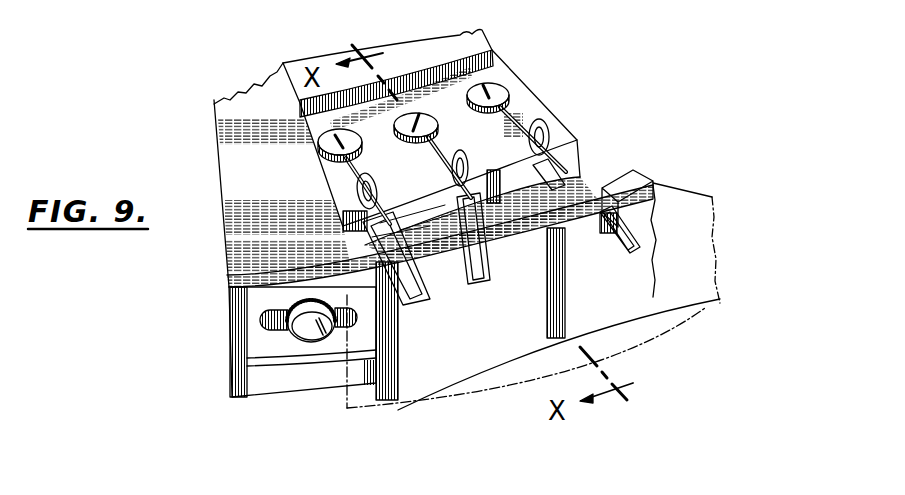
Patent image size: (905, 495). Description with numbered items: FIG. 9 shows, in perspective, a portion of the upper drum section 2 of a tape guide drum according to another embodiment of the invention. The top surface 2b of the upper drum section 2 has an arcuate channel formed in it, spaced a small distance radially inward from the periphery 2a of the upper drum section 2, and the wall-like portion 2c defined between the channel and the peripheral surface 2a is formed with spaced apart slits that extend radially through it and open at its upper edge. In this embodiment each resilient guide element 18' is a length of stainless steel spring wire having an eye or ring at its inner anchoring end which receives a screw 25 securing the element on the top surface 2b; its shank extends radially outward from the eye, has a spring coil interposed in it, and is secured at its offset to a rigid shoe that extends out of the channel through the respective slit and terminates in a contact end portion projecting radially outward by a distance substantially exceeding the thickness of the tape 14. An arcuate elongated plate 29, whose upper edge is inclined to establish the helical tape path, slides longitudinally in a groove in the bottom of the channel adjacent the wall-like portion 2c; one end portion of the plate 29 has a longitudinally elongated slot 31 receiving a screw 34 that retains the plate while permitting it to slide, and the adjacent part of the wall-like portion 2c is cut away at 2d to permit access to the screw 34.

The upper drum section 2 is at (560, 137).
The periphery of upper drum section 2a is at (413, 360).
The top surface of upper drum section 2b is at (480, 75).
The wall-like portion 2c is at (637, 170).
The cut-away part of wall-like portion 2d is at (323, 360).
The tape 14 is at (700, 255).
The resilient guide element 18' is at (407, 165).
The screw 25 is at (500, 92).
The elongated plate 29 is at (247, 343).
The longitudinally elongated slot 31 is at (265, 318).
The screw 34 is at (303, 332).